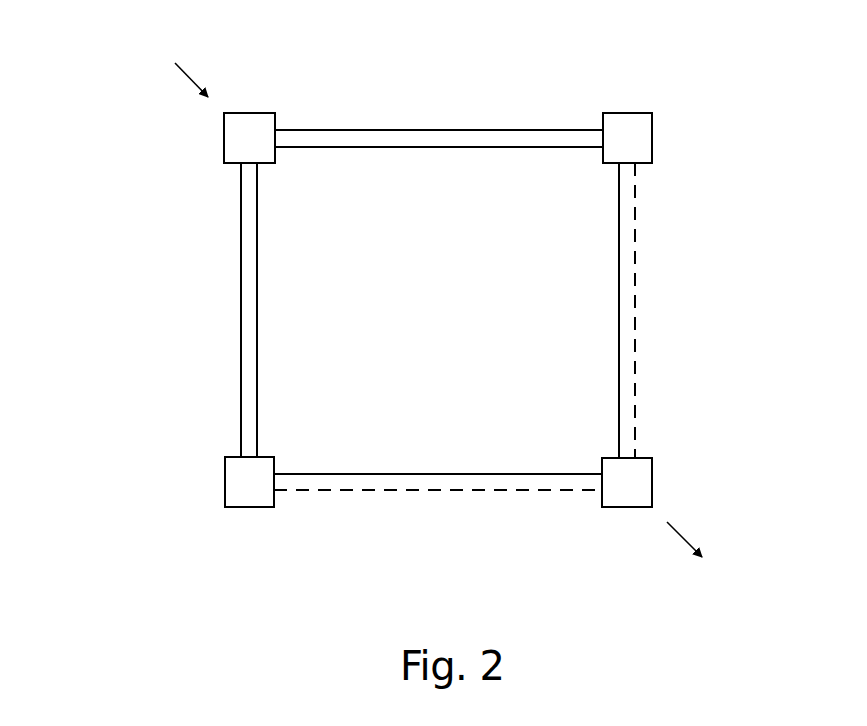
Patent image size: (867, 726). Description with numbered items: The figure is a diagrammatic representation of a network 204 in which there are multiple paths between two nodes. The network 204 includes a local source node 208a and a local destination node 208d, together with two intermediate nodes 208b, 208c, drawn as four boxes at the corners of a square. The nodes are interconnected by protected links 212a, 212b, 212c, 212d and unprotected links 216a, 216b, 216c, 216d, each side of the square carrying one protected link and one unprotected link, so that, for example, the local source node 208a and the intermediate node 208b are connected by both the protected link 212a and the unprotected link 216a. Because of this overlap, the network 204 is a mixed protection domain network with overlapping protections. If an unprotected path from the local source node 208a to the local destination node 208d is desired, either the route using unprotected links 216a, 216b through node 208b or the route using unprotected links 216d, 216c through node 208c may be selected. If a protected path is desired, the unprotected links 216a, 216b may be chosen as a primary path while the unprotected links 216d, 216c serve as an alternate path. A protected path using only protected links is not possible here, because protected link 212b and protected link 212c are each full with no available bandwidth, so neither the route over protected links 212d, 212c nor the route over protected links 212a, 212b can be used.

The network 204 is at (127, 23).
The local source node 208a is at (249, 113).
The intermediate node 208b is at (627, 113).
The intermediate node 208c is at (265, 457).
The local destination node 208d is at (652, 472).
The protected link 212a is at (470, 130).
The protected link 212b is at (634, 240).
The protected link 212c is at (480, 490).
The protected link 212d is at (240, 230).
The unprotected link 216a is at (470, 147).
The unprotected link 216b is at (619, 253).
The unprotected link 216c is at (471, 474).
The unprotected link 216d is at (258, 268).